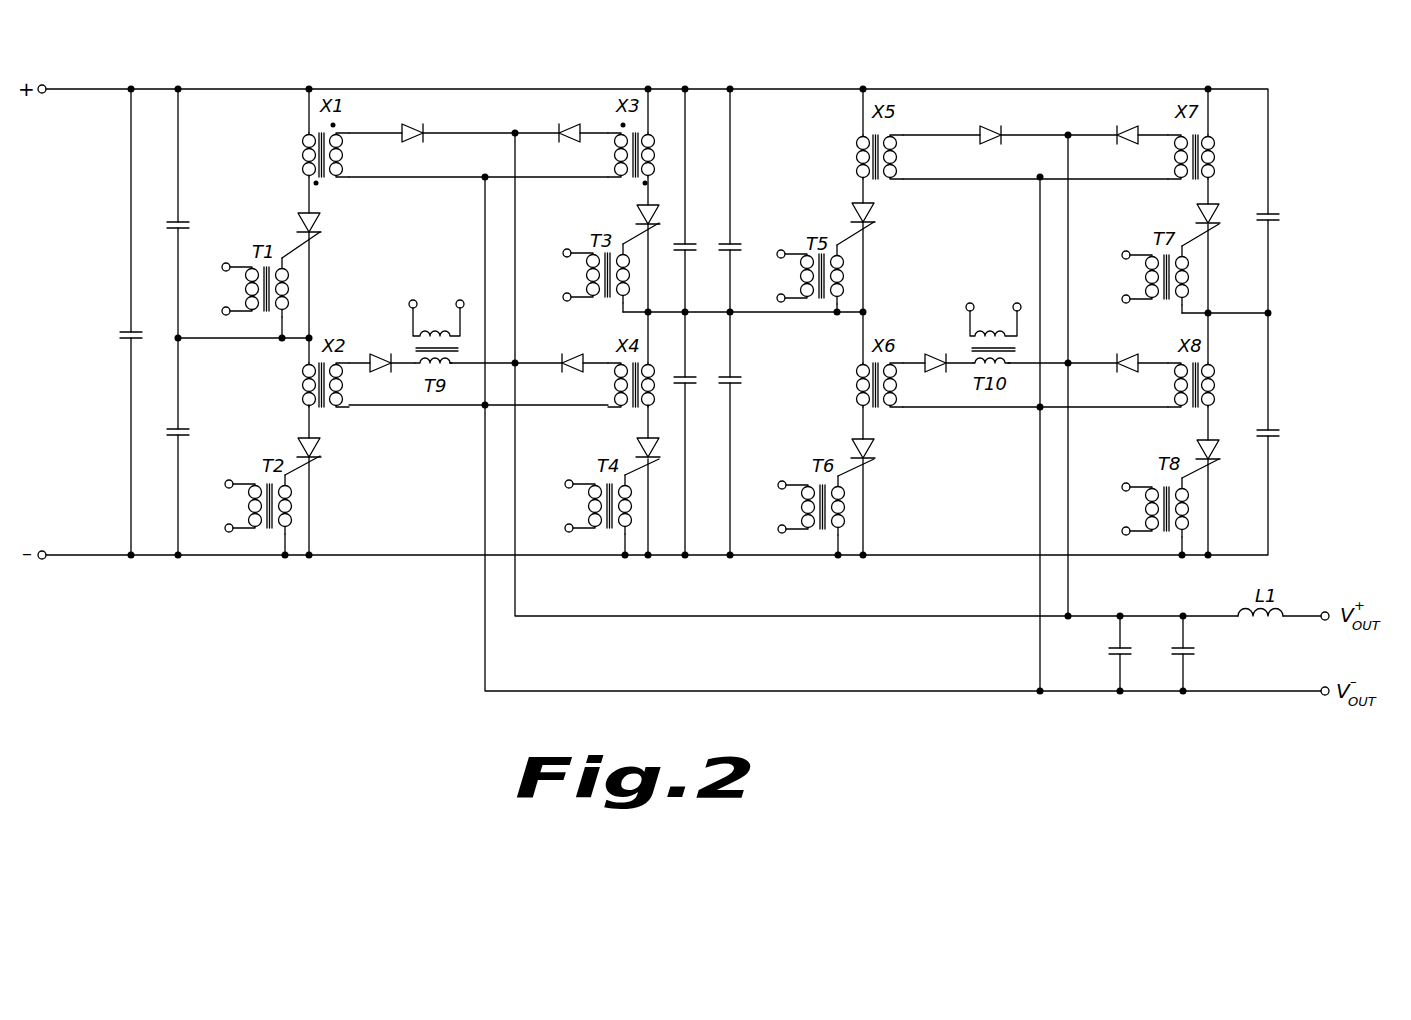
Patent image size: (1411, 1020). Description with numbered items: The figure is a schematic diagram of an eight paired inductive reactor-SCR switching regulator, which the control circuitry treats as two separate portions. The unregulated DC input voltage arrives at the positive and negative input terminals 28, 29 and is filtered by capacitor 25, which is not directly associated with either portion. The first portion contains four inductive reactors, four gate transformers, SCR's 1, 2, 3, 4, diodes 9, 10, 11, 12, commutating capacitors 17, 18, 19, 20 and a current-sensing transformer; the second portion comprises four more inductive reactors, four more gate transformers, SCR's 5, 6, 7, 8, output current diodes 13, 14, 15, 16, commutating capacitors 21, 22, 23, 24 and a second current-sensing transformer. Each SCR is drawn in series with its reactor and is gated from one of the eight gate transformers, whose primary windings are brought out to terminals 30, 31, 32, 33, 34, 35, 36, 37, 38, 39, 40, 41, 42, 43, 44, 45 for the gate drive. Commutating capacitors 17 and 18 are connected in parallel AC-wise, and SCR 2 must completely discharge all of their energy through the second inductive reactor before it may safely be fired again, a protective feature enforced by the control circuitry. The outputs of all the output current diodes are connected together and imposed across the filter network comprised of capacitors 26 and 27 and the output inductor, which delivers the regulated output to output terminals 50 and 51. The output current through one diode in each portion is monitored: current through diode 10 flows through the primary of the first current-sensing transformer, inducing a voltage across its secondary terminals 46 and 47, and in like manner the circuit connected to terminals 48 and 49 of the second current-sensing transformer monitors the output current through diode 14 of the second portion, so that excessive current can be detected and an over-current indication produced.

The SCR 1 is at (298, 217).
The SCR 2 is at (322, 448).
The SCR 3 is at (636, 212).
The SCR 4 is at (637, 448).
The SCR 5 is at (875, 212).
The SCR 6 is at (875, 453).
The SCR 7 is at (1196, 213).
The SCR 8 is at (1220, 450).
The diode 9 is at (414, 130).
The diode 10 is at (380, 356).
The diode 11 is at (558, 130).
The diode 12 is at (572, 358).
The output current diode 13 is at (980, 130).
The output current diode 14 is at (930, 356).
The output current diode 15 is at (1122, 130).
The output current diode 16 is at (1120, 356).
The commutating capacitor 17 is at (183, 230).
The commutating capacitor 18 is at (183, 436).
The commutating capacitor 19 is at (688, 245).
The commutating capacitor 20 is at (687, 375).
The commutating capacitor 21 is at (735, 246).
The commutating capacitor 22 is at (735, 376).
The commutating capacitor 23 is at (1275, 215).
The commutating capacitor 24 is at (1280, 432).
The filter capacitor 25 is at (122, 336).
The capacitor 26 is at (1108, 652).
The capacitor 27 is at (1196, 652).
The positive input terminal 28 is at (45, 86).
The negative input terminal 29 is at (43, 560).
The gate drive input terminal 30 is at (222, 266).
The gate drive input terminal 31 is at (222, 310).
The gate drive input terminal 32 is at (225, 484).
The gate drive input terminal 33 is at (225, 527).
The gate drive input terminal 34 is at (563, 253).
The gate drive input terminal 35 is at (563, 297).
The gate drive input terminal 36 is at (565, 484).
The gate drive input terminal 37 is at (565, 528).
The gate drive input terminal 38 is at (777, 255).
The gate drive input terminal 39 is at (777, 298).
The gate drive input terminal 40 is at (778, 485).
The gate drive input terminal 41 is at (778, 529).
The gate drive input terminal 42 is at (1122, 255).
The gate drive input terminal 43 is at (1122, 299).
The gate drive input terminal 44 is at (1122, 487).
The gate drive input terminal 45 is at (1122, 531).
The secondary terminal of transformer T9 46 is at (410, 300).
The secondary terminal of transformer T9 47 is at (460, 300).
The terminal 48 is at (975, 292).
The terminal 49 is at (1017, 303).
The output terminal 50 is at (1328, 612).
The output terminal 51 is at (1322, 696).